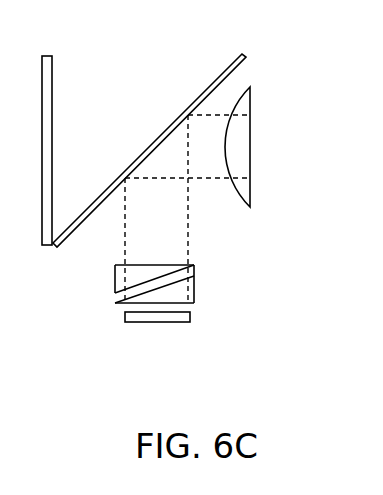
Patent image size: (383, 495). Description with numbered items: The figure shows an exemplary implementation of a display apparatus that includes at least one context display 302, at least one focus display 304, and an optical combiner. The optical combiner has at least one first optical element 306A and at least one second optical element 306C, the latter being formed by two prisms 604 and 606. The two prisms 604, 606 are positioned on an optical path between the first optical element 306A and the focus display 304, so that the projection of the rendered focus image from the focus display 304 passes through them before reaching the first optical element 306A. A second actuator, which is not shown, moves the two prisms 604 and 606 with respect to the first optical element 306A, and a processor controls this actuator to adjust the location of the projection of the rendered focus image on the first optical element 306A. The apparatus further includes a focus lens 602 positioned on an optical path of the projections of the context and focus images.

The context display 302 is at (76, 129).
The focus display 304 is at (151, 347).
The first optical element 306A is at (149, 128).
The second optical element 306C is at (209, 259).
The focus lens 602 is at (270, 147).
The prism 604 is at (81, 292).
The prism 606 is at (226, 295).